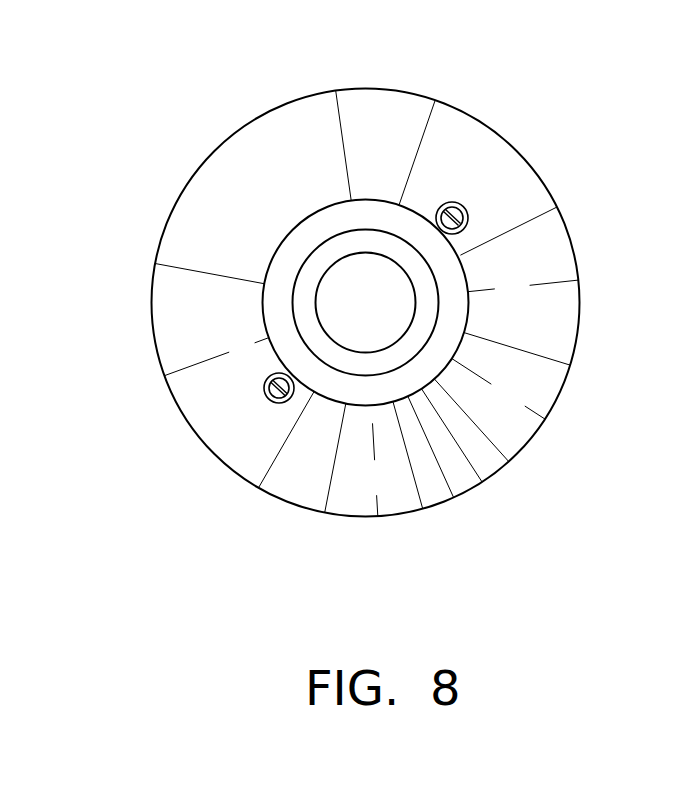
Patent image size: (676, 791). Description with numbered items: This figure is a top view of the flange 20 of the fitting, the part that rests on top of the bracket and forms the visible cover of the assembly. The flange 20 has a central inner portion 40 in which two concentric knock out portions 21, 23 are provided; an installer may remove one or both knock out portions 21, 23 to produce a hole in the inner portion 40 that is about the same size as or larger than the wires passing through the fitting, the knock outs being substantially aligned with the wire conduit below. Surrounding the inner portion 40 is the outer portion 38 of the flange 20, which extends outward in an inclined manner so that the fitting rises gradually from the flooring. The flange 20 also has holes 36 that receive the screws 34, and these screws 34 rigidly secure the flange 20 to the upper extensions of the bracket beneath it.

The flange 20 is at (188, 478).
The knock out portion 21 is at (403, 299).
The knock out portion 23 is at (412, 351).
The screws 34 is at (267, 399).
The holes 36 is at (270, 376).
The outer portion 38 is at (288, 490).
The inner portion 40 is at (378, 397).